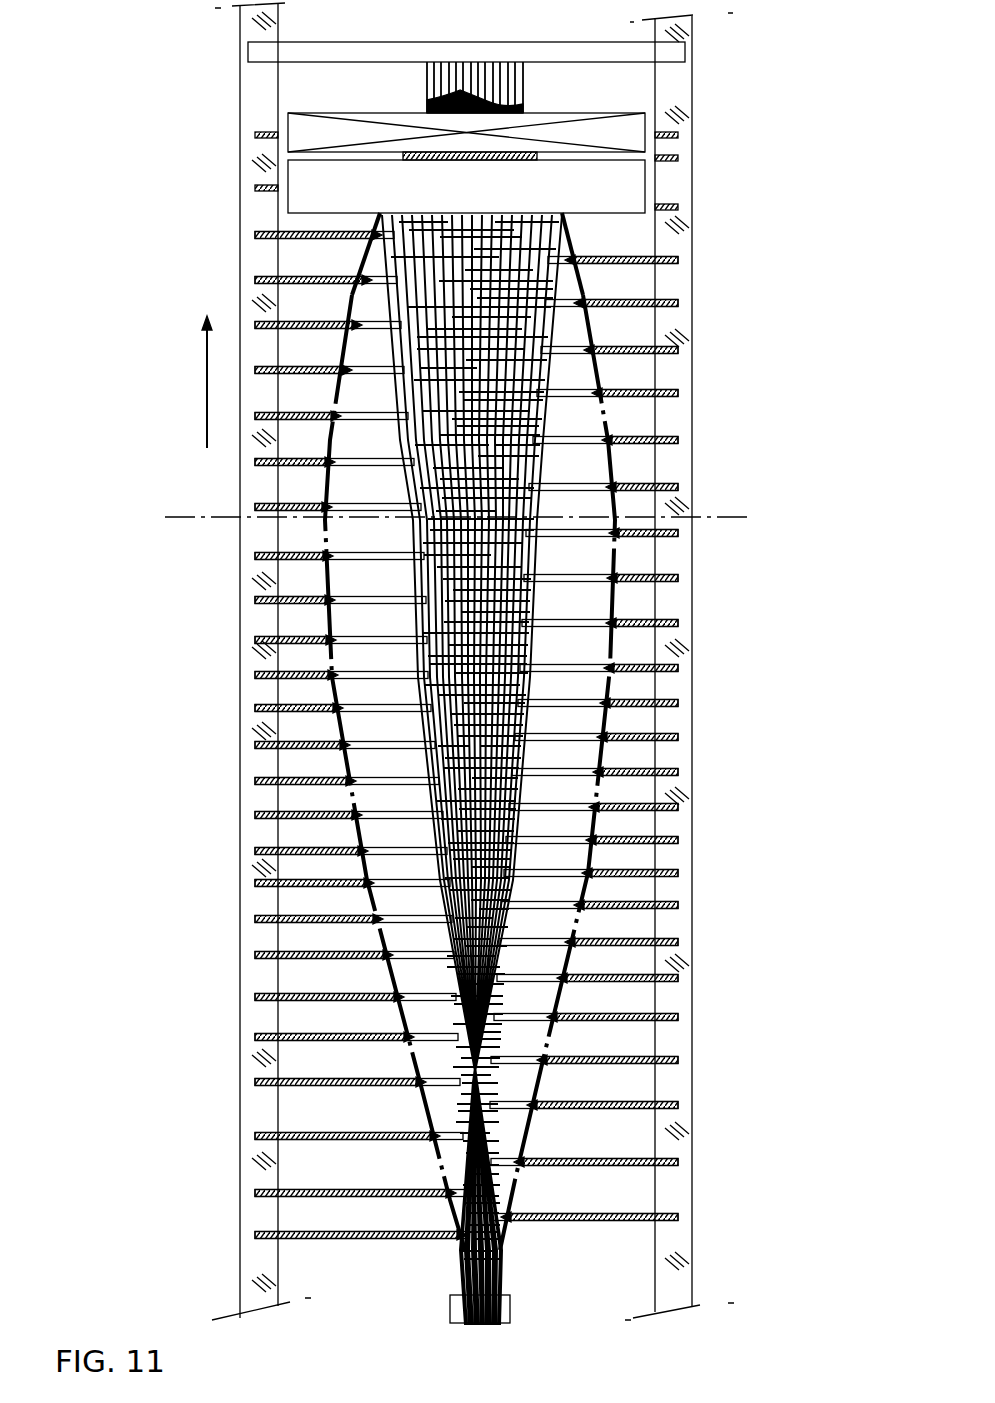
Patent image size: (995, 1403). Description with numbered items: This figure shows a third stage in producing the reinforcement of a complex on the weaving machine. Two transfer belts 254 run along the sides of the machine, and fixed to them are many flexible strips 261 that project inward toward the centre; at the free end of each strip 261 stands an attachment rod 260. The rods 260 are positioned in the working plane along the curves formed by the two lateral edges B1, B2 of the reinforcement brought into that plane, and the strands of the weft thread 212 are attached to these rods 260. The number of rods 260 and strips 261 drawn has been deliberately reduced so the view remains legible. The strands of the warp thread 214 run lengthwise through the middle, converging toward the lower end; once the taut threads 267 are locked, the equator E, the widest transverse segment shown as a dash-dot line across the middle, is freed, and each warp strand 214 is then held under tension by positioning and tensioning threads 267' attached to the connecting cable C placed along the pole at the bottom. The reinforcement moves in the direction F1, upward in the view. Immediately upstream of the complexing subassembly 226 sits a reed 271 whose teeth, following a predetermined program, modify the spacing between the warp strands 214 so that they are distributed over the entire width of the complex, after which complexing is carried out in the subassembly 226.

The weft thread 212 is at (595, 765).
The warp thread 214 is at (590, 318).
The complexing subassembly 226 is at (310, 115).
The transfer belts 254 is at (670, 1040).
The attachment rods 260 is at (622, 445).
The flexible strips 261 is at (625, 910).
The taut threads 267 is at (527, 87).
The positioning and tensioning threads 267' is at (533, 1305).
The reed 271 is at (625, 187).
The connecting cable C is at (430, 100).
The equator E is at (190, 512).
The movement direction F1 is at (207, 410).
The lateral edge B1 is at (300, 757).
The lateral edge B2 is at (615, 598).